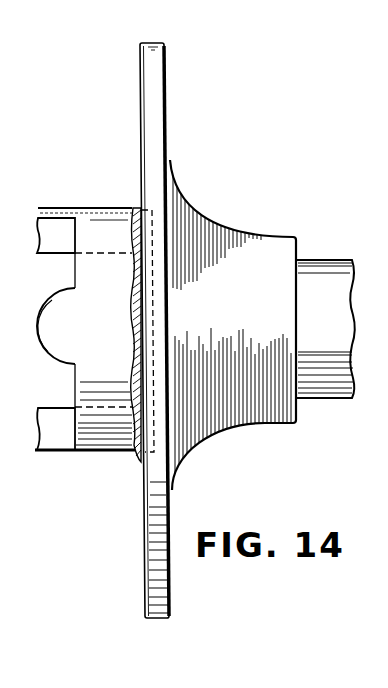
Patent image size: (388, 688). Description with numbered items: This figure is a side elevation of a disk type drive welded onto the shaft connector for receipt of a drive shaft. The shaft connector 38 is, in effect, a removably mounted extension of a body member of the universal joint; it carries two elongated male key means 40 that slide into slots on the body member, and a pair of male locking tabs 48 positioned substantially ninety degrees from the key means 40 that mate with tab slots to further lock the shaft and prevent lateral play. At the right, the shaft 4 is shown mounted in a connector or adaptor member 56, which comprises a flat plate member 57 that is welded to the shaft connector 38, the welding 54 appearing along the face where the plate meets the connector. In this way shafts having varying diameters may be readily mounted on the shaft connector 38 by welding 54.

The shaft 4 is at (311, 282).
The shaft connector 38 is at (84, 194).
The male key means 40 is at (52, 234).
The male locking tabs 48 is at (60, 344).
The welding 54 is at (137, 203).
The adaptor member 56 is at (255, 250).
The flat plate member 57 is at (158, 102).